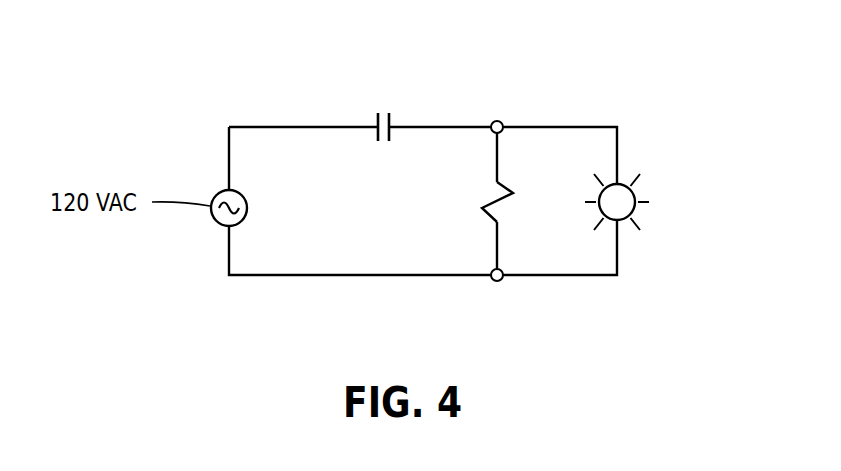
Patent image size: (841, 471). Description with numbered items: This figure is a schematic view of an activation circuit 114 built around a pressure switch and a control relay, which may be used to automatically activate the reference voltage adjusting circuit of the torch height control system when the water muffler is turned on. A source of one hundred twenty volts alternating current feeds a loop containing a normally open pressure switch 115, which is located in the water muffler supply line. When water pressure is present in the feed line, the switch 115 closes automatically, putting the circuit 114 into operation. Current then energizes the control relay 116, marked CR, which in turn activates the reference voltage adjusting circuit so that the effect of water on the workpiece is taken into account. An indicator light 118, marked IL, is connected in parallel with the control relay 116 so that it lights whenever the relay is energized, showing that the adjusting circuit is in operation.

The activation circuit 114 is at (303, 127).
The pressure switch 115 is at (391, 126).
The control relay 116 is at (482, 210).
The indicator light 118 is at (637, 192).